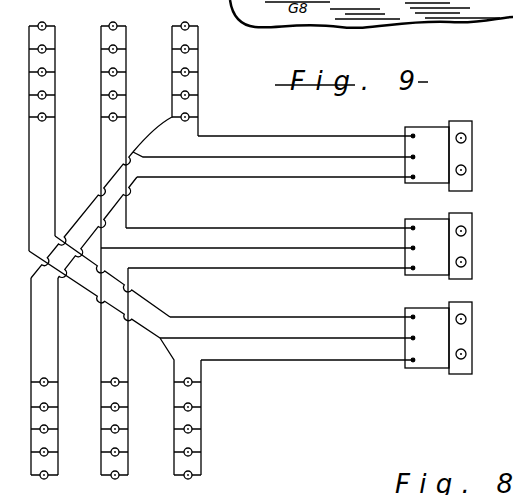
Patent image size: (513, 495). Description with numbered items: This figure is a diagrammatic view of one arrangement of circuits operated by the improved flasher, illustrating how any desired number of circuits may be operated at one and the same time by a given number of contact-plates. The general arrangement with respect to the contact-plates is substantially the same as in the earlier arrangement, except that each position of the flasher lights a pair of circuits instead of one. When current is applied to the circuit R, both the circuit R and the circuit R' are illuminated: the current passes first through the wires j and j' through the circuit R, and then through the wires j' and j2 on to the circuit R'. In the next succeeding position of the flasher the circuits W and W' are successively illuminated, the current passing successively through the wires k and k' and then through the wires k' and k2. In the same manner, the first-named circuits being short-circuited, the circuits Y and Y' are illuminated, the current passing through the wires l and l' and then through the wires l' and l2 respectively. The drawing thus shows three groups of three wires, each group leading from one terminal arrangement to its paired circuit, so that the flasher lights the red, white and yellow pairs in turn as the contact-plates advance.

The circuit R' is at (99, 169).
The circuit W' is at (113, 238).
The circuit Y' is at (114, 139).
The circuit Y is at (251, 308).
The circuit W is at (286, 354).
The circuit R is at (316, 398).
The wire l2 is at (306, 121).
The wire l is at (274, 181).
The wire l' is at (276, 182).
The wire k2 is at (266, 228).
The wire k' is at (258, 273).
The wire k is at (271, 280).
The wire j2 is at (360, 317).
The wire j is at (287, 365).
The wire j' is at (308, 368).